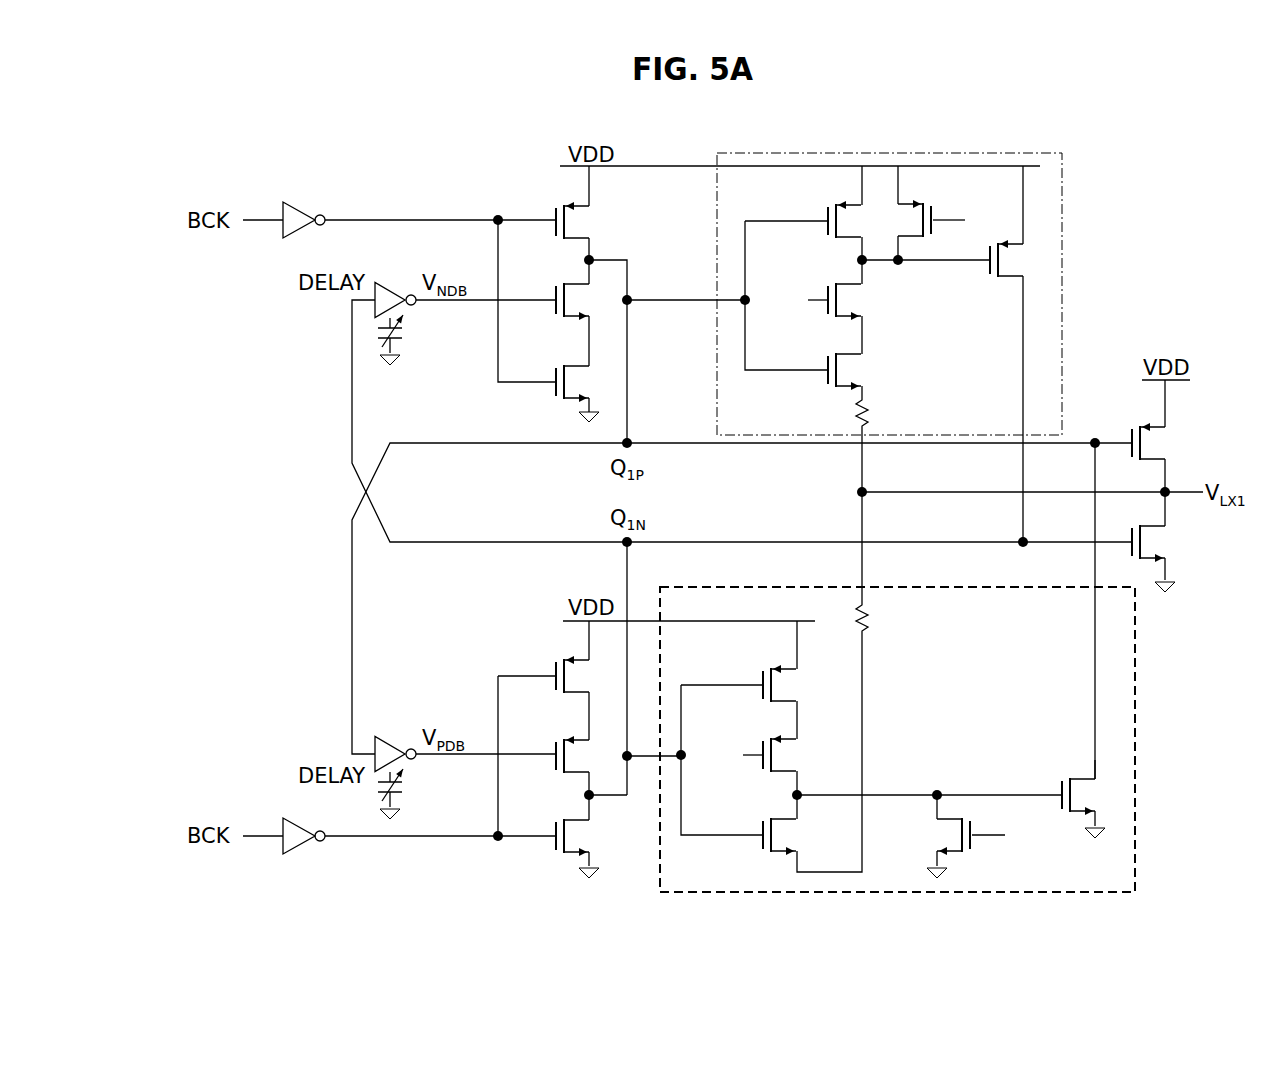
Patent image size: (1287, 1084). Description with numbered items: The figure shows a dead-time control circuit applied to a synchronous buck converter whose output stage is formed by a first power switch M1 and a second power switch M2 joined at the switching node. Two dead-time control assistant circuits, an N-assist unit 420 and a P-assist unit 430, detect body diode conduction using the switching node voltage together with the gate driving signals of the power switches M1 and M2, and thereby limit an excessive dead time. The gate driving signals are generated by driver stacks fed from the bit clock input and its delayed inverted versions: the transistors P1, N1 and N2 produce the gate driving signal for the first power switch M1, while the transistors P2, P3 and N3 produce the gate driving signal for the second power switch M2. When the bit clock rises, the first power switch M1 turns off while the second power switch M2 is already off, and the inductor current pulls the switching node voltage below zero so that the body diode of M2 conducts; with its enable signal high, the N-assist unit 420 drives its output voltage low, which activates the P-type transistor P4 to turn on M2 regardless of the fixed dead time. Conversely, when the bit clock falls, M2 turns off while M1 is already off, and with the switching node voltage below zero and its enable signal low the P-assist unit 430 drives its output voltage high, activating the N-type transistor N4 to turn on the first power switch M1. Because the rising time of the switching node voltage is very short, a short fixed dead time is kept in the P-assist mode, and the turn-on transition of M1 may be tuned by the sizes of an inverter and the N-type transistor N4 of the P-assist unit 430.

The N-assist unit 420 is at (887, 331).
The P-assist unit 430 is at (939, 756).
The first PMOS transistor P1 is at (587, 213).
The first NMOS transistor N1 is at (588, 300).
The second NMOS transistor N2 is at (588, 381).
The second PMOS transistor P2 is at (587, 668).
The third PMOS transistor P3 is at (587, 755).
The third NMOS transistor N3 is at (588, 836).
The P-type transistor P4 is at (1022, 354).
The N-type transistor N4 is at (1093, 799).
The first power switch M1 is at (1164, 436).
The second power switch M2 is at (1164, 542).